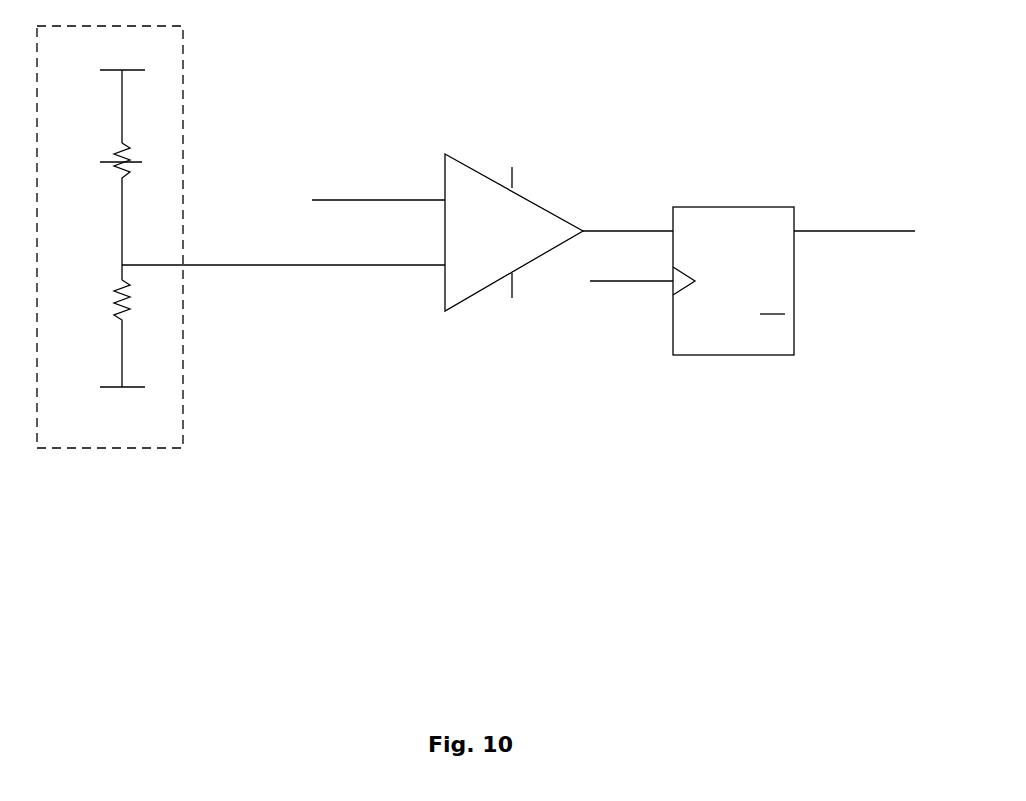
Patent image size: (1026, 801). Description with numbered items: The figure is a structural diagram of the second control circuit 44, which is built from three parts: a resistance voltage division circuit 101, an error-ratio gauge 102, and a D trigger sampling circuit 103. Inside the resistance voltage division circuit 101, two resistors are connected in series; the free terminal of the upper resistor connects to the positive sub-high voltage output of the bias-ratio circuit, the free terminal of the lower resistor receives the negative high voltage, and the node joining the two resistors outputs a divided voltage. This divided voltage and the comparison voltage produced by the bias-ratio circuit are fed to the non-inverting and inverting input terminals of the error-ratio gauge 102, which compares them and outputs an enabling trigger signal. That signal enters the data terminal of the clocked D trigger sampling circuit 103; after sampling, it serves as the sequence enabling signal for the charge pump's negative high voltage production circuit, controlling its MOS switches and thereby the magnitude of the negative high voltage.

The second control circuit 44 is at (524, 89).
The resistance voltage division circuit 101 is at (183, 67).
The error-ratio gauge 102 is at (530, 202).
The D trigger sampling circuit 103 is at (733, 206).